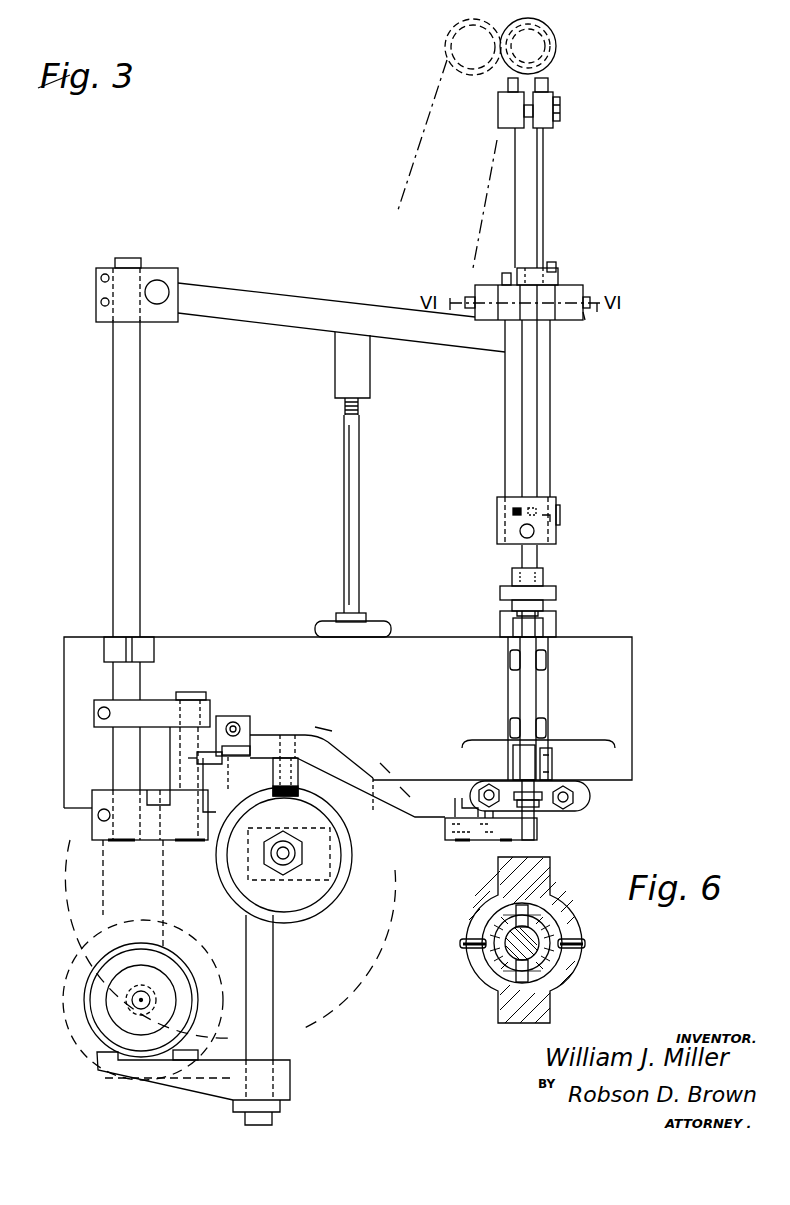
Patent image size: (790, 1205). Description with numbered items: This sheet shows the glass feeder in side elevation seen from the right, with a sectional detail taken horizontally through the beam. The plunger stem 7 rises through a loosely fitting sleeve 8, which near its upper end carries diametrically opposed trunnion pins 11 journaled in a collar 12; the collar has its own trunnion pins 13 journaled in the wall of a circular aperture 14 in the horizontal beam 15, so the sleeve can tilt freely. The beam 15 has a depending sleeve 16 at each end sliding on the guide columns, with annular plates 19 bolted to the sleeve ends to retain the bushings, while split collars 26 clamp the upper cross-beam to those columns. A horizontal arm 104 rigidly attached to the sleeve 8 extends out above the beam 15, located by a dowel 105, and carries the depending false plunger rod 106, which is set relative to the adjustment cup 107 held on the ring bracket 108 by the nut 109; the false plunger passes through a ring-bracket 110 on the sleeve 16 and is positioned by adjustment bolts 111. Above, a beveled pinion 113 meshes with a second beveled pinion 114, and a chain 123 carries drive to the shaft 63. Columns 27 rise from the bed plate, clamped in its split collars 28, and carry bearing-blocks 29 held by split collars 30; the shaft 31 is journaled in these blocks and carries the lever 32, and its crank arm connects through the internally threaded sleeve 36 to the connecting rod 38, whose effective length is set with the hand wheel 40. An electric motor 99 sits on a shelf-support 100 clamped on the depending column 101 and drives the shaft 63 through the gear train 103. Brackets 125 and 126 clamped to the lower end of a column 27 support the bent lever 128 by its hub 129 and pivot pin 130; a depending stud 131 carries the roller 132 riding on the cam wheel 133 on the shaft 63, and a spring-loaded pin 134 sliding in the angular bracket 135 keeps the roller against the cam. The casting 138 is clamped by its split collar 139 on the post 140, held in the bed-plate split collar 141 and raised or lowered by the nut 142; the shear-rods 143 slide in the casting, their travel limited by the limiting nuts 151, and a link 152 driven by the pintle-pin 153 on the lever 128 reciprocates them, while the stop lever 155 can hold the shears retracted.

In FIG. 6, the stem 7 is at (562, 928).
In FIG. 6, the sleeve 8 is at (478, 977).
In FIG. 6, the trunnion pins 11 is at (521, 908).
In FIG. 6, the collar 12 is at (510, 918).
In FIG. 3, the trunnion pins 13 is at (588, 314).
In FIG. 6, the trunnion pins 13 is at (460, 944).
In FIG. 6, the circular aperture 14 is at (494, 960).
In FIG. 3, the beam 15 is at (583, 294).
In FIG. 6, the beam 15 is at (498, 879).
In FIG. 3, the depending sleeve 16 is at (550, 425).
In FIG. 3, the annular plates 19 is at (502, 283).
In FIG. 3, the split collars 26 is at (510, 125).
In FIG. 3, the columns 27 is at (142, 353).
In FIG. 3, the split collars 28 is at (104, 665).
In FIG. 3, the bearing-blocks 29 is at (178, 324).
In FIG. 3, the split collars 30 is at (96, 320).
In FIG. 3, the shaft 31 is at (168, 290).
In FIG. 3, the lever 32 is at (341, 317).
In FIG. 3, the internally threaded sleeve 36 is at (370, 383).
In FIG. 3, the connecting rod 38 is at (360, 497).
In FIG. 3, the hand wheel 40 is at (391, 629).
In FIG. 3, the shaft 63 is at (295, 853).
In FIG. 3, the electric motor 99 is at (153, 1000).
In FIG. 3, the shelf-support 100 is at (193, 1087).
In FIG. 3, the depending column 101 is at (274, 1001).
In FIG. 3, the gear train 103 is at (240, 976).
In FIG. 3, the arm 104 is at (558, 282).
In FIG. 3, the dowel 105 is at (556, 268).
In FIG. 3, the false plunger rod 106 is at (537, 395).
In FIG. 3, the adjustment cup 107 is at (545, 578).
In FIG. 3, the ring bracket 108 is at (556, 591).
In FIG. 3, the nut 109 is at (545, 605).
In FIG. 3, the ring-bracket 110 is at (497, 527).
In FIG. 3, the adjustment bolts 111 is at (541, 532).
In FIG. 3, the pinion 113 is at (546, 76).
In FIG. 3, the second beveled pinion 114 is at (540, 57).
In FIG. 3, the chain 123 is at (482, 212).
In FIG. 3, the bracket 125 is at (152, 713).
In FIG. 3, the bracket 126 is at (150, 815).
In FIG. 3, the bent lever 128 is at (297, 732).
In FIG. 3, the hub 129 is at (180, 752).
In FIG. 3, the pivot pin 130 is at (192, 687).
In FIG. 3, the depending stud 131 is at (360, 757).
In FIG. 3, the roller 132 is at (273, 787).
In FIG. 3, the cam wheel 133 is at (352, 861).
In FIG. 3, the pin 134 is at (240, 716).
In FIG. 3, the angular bracket 135 is at (250, 733).
In FIG. 3, the casting 138 is at (575, 800).
In FIG. 3, the split collar 139 is at (553, 757).
In FIG. 3, the post 140 is at (527, 745).
In FIG. 3, the split collar 141 is at (508, 701).
In FIG. 3, the nut 142 is at (556, 619).
In FIG. 3, the shear-rods 143 is at (476, 794).
In FIG. 3, the limiting nuts 151 is at (545, 812).
In FIG. 3, the link 152 is at (535, 822).
In FIG. 3, the pintle-pin 153 is at (533, 832).
In FIG. 3, the stop lever 155 is at (487, 842).